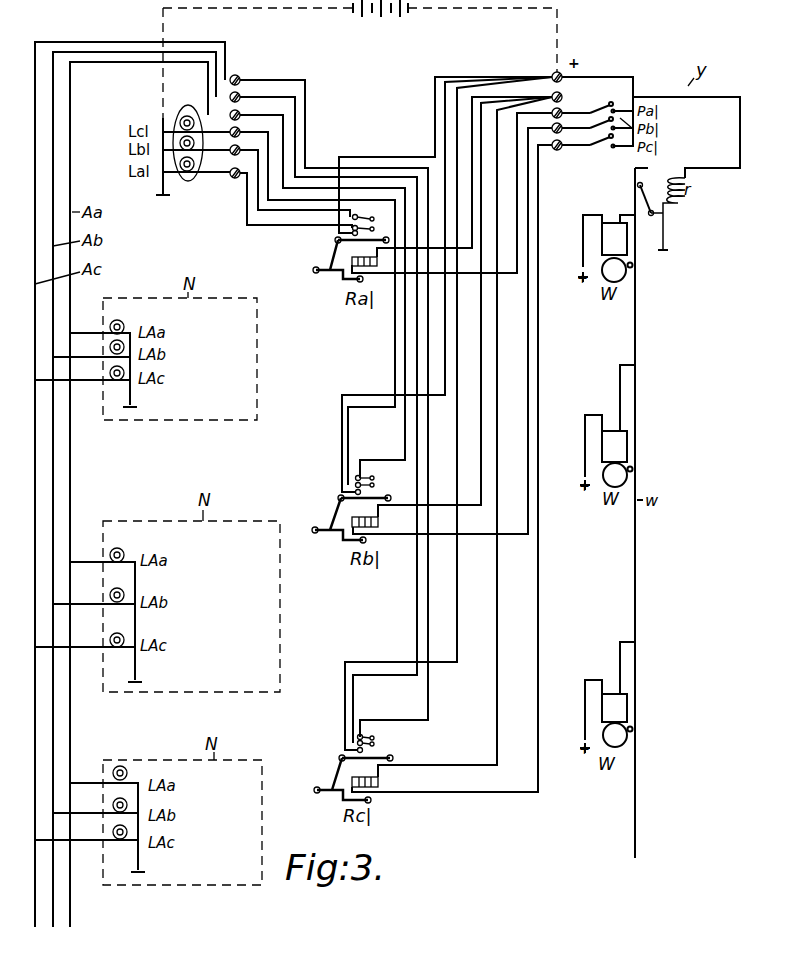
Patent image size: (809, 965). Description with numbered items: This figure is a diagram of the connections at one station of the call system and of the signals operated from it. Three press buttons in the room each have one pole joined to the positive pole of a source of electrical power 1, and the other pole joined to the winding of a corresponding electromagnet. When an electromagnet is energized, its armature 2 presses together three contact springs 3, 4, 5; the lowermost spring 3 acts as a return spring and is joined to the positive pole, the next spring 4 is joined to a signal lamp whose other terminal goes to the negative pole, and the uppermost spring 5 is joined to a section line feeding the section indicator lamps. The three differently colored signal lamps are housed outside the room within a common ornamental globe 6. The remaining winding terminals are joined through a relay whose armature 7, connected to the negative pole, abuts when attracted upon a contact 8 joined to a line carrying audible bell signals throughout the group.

The source of electrical power 1 is at (380, 26).
The armature 2 is at (327, 265).
The contact spring 3 is at (394, 757).
The contact spring 4 is at (380, 226).
The contact spring 5 is at (374, 215).
The common ornamental globe 6 is at (186, 181).
The armature 7 is at (652, 206).
The contact 8 is at (648, 182).